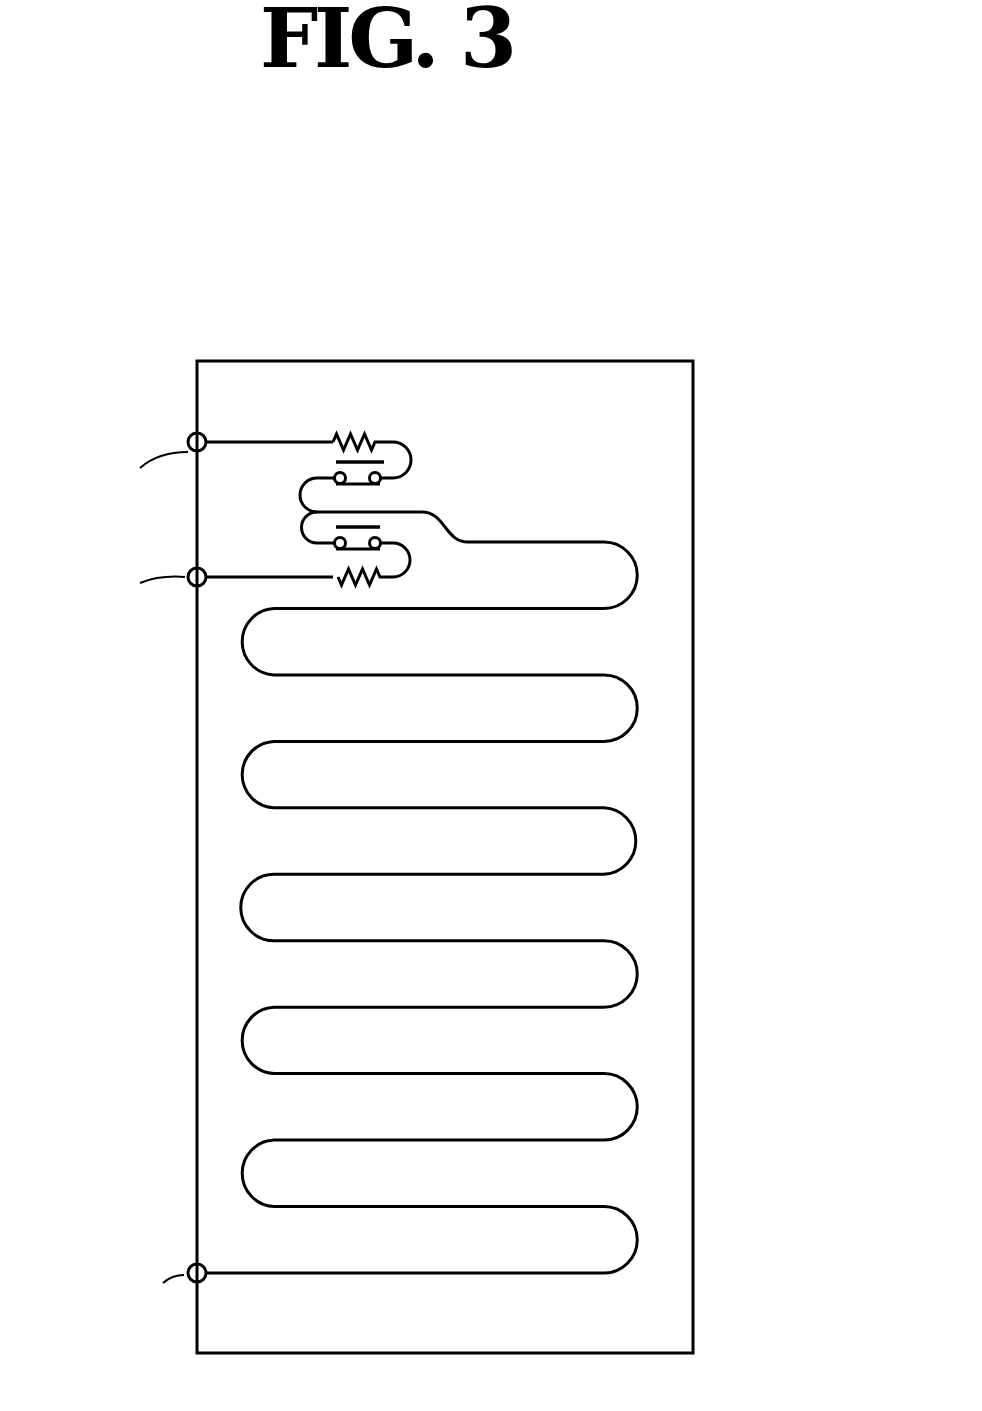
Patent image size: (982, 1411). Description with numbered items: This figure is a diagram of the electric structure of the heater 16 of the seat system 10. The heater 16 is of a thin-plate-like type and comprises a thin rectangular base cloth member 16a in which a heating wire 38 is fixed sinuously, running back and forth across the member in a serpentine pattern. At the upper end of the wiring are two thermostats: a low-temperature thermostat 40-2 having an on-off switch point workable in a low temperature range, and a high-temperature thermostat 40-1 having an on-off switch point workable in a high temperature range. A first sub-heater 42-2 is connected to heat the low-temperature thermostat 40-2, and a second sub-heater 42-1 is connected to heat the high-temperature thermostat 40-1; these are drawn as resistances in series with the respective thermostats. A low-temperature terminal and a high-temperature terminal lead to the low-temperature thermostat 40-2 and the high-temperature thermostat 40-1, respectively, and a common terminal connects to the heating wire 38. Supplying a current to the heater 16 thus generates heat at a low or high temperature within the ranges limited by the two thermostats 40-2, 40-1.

The heating unit 10 is at (177, 282).
The heater 16 is at (698, 450).
The base cloth member 16a is at (657, 773).
The heating wire 38 is at (640, 678).
The high-temperature thermostat 40-1 is at (337, 548).
The low-temperature thermostat 40-2 is at (385, 487).
The second sub-heater 42-1 is at (380, 585).
The first sub-heater 42-2 is at (377, 435).